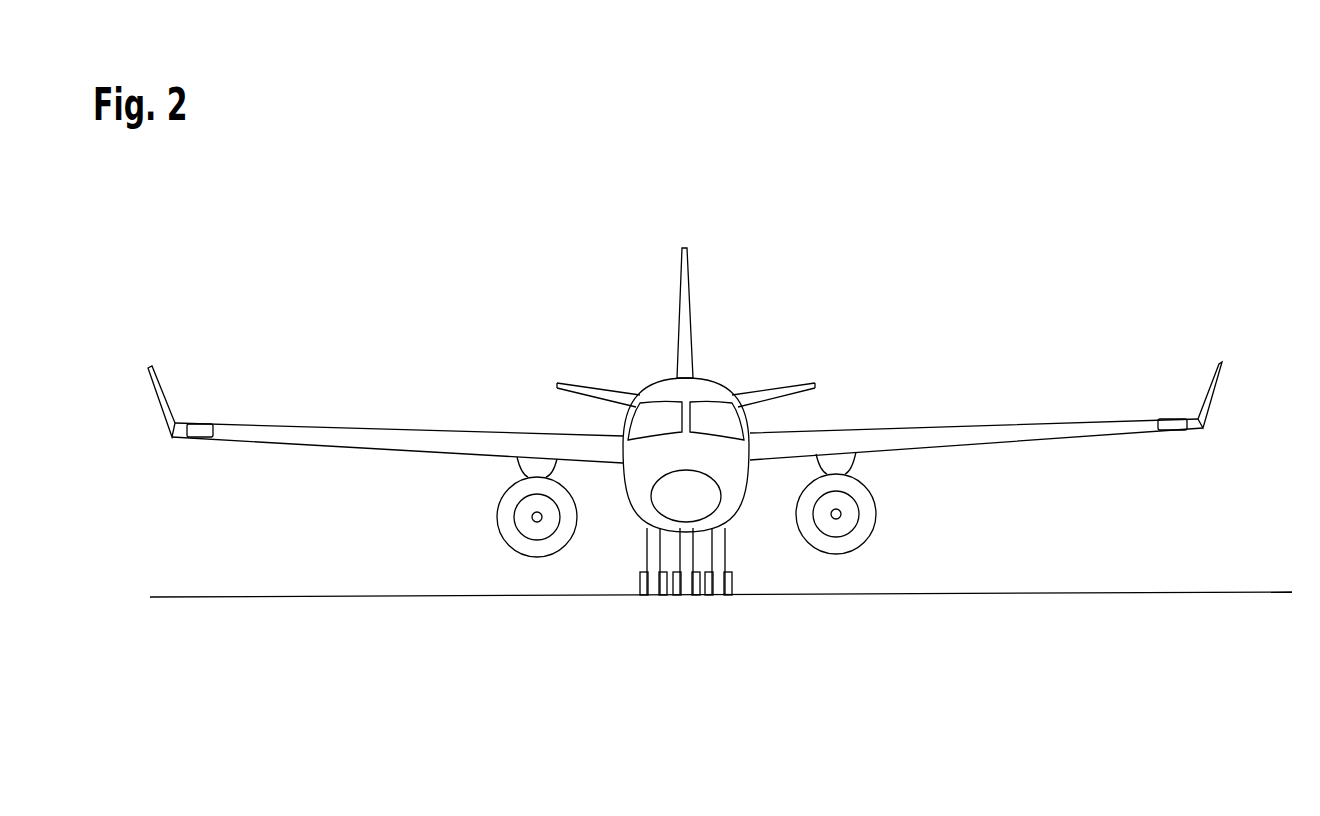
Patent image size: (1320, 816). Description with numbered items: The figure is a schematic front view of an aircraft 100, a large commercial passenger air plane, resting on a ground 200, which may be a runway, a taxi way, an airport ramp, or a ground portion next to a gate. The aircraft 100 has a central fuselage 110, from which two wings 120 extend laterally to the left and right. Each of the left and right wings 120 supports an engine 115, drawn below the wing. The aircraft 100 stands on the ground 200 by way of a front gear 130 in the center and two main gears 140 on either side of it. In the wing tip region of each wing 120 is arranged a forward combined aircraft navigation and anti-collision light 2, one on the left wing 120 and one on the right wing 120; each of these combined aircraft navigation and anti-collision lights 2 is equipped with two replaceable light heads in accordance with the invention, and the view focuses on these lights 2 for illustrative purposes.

The aircraft 100 is at (1220, 284).
The fuselage 110 is at (725, 368).
The engine 115 is at (493, 515).
The wing 120 is at (364, 440).
The combined aircraft navigation and anti-collision light 2 is at (198, 424).
The front gear 130 is at (687, 596).
The main gear 140 is at (649, 612).
The ground 200 is at (310, 598).